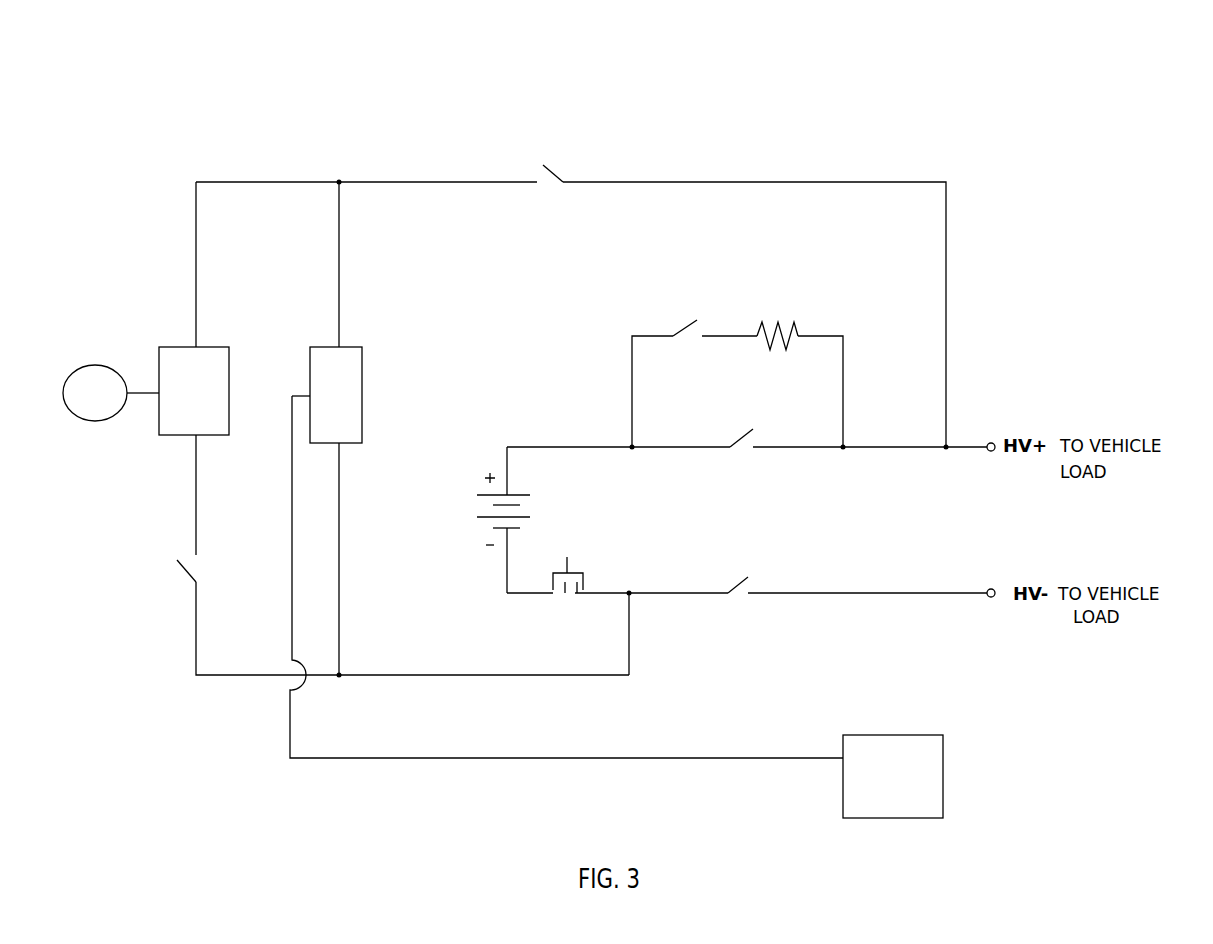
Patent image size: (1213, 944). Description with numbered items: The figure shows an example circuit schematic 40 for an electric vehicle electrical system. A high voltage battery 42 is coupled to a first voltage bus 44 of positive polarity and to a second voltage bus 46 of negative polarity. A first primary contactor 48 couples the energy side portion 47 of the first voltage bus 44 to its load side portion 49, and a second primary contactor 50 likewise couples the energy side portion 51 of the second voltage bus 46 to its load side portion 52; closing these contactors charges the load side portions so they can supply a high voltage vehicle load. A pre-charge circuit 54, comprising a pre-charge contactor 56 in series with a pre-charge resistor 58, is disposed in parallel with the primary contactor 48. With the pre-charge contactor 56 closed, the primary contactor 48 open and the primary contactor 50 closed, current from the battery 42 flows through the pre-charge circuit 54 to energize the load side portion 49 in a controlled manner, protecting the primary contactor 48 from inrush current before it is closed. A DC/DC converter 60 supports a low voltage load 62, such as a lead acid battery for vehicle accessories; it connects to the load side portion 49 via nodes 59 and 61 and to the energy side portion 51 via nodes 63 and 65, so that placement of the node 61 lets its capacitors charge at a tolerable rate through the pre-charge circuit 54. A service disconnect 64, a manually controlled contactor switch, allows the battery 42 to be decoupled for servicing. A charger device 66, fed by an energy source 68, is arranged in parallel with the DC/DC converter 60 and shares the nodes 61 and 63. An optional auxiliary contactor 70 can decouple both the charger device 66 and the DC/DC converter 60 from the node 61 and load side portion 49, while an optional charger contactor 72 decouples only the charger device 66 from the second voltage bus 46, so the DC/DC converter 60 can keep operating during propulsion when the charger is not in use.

The circuit schematic 40 is at (653, 92).
The high voltage battery 42 is at (472, 484).
The first voltage bus 44 is at (559, 429).
The second voltage bus 46 is at (527, 596).
The first portion of the first voltage bus 47 is at (657, 450).
The first primary contactor 48 is at (747, 421).
The second portion of the first voltage bus 49 is at (812, 450).
The second primary contactor 50 is at (759, 581).
The first portion of the second voltage bus 51 is at (672, 601).
The second portion of the second voltage bus 52 is at (840, 601).
The pre-charge circuit 54 is at (764, 282).
The pre-charge contactor 56 is at (679, 317).
The pre-charge resistor 58 is at (798, 328).
The node 59 is at (339, 182).
The DC/DC converter 60 is at (326, 423).
The node 61 is at (946, 447).
The low voltage load 62 is at (882, 808).
The node 63 is at (629, 593).
The service disconnect 64 is at (583, 573).
The node 65 is at (339, 675).
The charger device 66 is at (183, 410).
The energy source 68 is at (86, 413).
The auxiliary contactor 70 is at (533, 164).
The charger contactor 72 is at (173, 569).